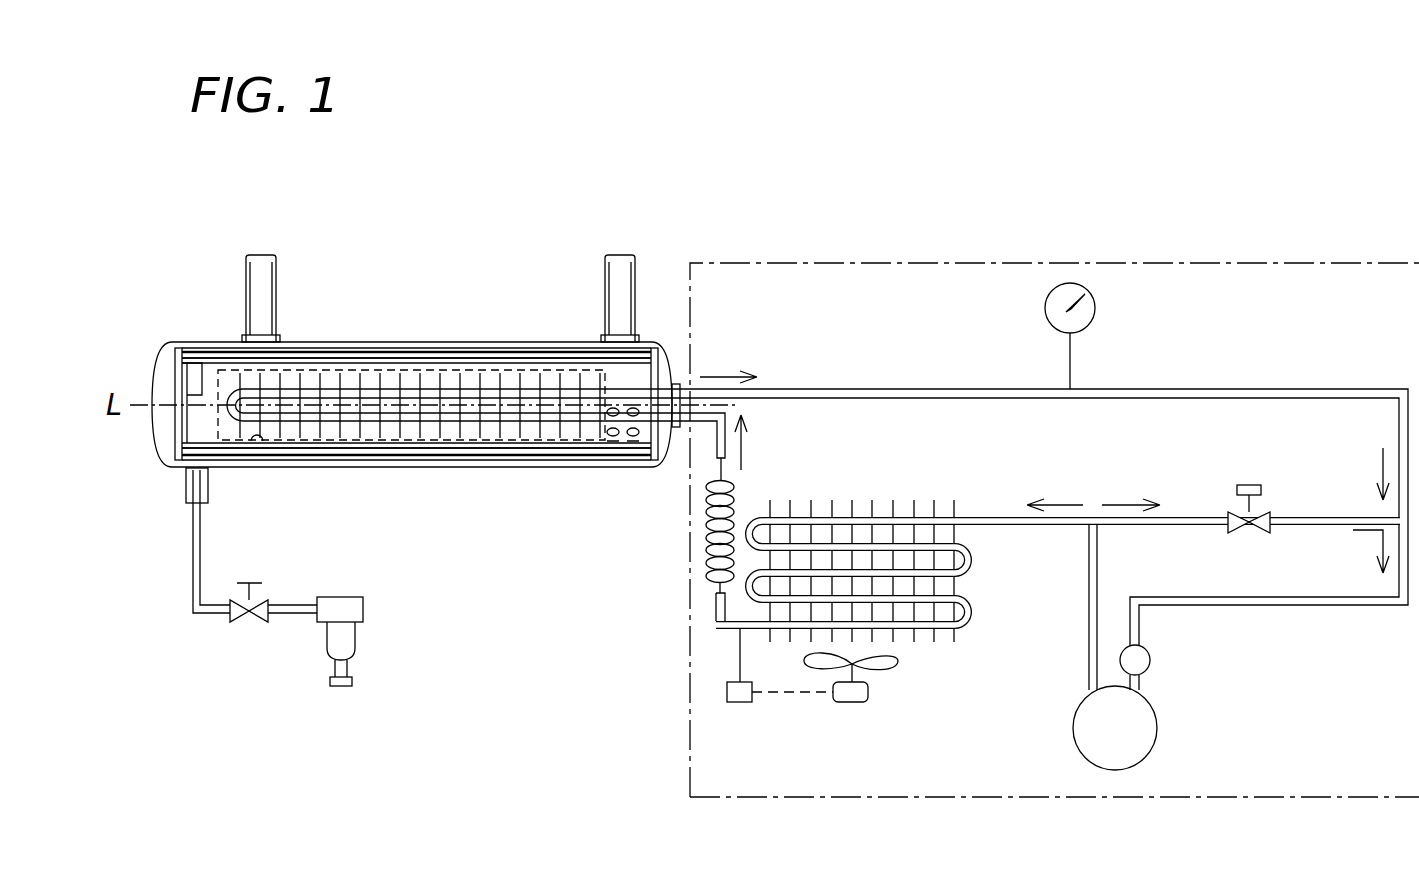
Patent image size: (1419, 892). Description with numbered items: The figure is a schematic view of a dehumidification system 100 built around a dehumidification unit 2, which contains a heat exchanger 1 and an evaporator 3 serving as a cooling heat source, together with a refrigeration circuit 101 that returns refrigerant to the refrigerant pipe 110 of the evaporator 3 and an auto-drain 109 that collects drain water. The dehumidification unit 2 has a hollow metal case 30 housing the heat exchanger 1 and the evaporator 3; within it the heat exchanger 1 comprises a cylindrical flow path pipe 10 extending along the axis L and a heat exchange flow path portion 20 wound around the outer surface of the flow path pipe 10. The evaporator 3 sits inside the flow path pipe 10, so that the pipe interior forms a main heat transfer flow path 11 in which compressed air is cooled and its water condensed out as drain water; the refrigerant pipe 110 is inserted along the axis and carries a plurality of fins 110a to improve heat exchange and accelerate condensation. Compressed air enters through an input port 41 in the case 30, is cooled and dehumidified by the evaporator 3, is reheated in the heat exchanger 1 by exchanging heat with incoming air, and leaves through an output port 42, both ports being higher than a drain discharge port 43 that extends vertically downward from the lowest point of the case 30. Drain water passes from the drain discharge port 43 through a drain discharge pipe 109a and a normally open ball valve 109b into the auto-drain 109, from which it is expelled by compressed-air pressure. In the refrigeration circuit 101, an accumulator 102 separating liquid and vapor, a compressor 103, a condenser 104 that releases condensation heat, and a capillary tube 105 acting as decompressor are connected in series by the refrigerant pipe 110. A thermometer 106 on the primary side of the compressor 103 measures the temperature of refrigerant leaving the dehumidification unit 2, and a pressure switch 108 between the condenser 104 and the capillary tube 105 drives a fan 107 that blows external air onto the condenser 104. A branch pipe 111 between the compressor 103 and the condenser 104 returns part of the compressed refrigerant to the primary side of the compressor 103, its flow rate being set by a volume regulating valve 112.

The heat exchanger 1 is at (447, 476).
The dehumidification unit 2 is at (459, 243).
The evaporator 3 is at (476, 362).
The flow path pipe 10 is at (258, 447).
The main heat transfer flow path 11 is at (214, 437).
The heat exchange flow path portion 20 is at (398, 352).
The case 30 is at (324, 470).
The input port 41 is at (620, 281).
The output port 42 is at (258, 284).
The drain discharge port 43 is at (195, 492).
The dehumidification system 100 is at (1156, 119).
The refrigeration circuit 101 is at (864, 240).
The accumulator 102 is at (1143, 658).
The compressor 103 is at (1140, 727).
The condenser 104 is at (913, 632).
The capillary tube 105 is at (705, 550).
The thermometer 106 is at (1095, 308).
The fan 107 is at (852, 704).
The pressure switch 108 is at (738, 704).
The auto-drain 109 is at (340, 643).
The drain discharge pipe 109a is at (197, 565).
The ball valve 109b is at (239, 614).
The refrigerant pipe 110 is at (1295, 390).
The fins 110a is at (340, 382).
The branch pipe 111 is at (1173, 516).
The volume regulating valve 112 is at (1258, 484).